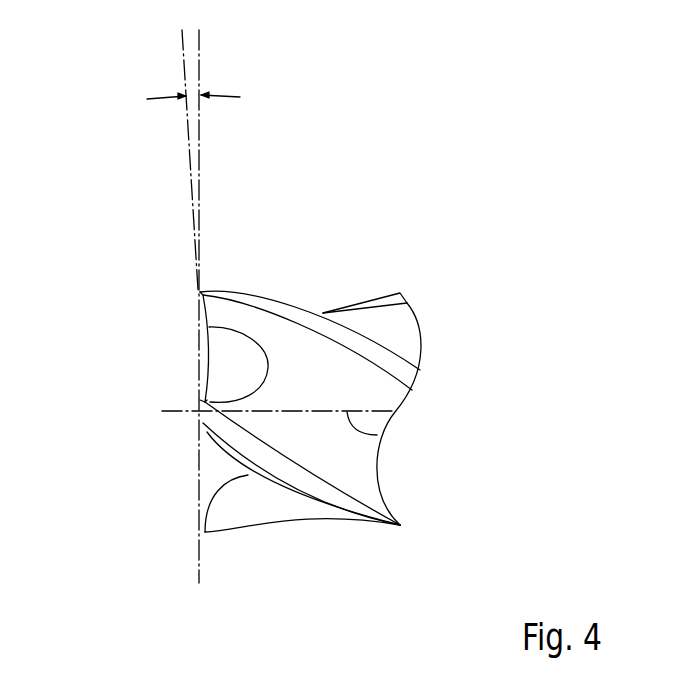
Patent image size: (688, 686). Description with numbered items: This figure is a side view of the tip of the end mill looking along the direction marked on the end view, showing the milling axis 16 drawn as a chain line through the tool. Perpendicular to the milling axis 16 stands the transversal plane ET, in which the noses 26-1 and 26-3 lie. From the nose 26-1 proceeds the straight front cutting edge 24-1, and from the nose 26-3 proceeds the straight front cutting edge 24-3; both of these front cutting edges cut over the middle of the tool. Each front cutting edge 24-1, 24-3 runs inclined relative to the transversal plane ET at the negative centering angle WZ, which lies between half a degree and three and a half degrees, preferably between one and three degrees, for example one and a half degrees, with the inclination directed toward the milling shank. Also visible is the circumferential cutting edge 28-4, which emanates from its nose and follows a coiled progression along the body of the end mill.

The milling axis 16 is at (378, 435).
The front cutting edge 24-1 is at (207, 329).
The front cutting edge 24-3 is at (200, 489).
The nose 26-1 is at (200, 292).
The nose 26-3 is at (203, 533).
The circumferential cutting edge 28-4 is at (299, 468).
The negative centering angle WZ is at (195, 92).
The transversal plane ET is at (200, 570).